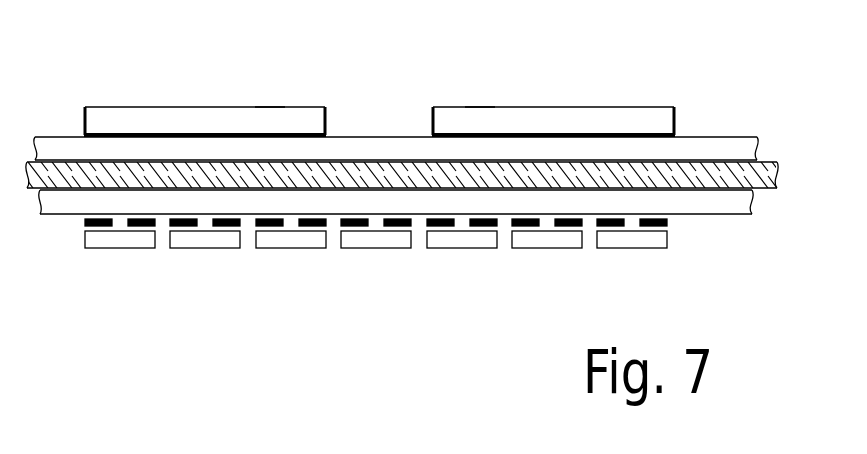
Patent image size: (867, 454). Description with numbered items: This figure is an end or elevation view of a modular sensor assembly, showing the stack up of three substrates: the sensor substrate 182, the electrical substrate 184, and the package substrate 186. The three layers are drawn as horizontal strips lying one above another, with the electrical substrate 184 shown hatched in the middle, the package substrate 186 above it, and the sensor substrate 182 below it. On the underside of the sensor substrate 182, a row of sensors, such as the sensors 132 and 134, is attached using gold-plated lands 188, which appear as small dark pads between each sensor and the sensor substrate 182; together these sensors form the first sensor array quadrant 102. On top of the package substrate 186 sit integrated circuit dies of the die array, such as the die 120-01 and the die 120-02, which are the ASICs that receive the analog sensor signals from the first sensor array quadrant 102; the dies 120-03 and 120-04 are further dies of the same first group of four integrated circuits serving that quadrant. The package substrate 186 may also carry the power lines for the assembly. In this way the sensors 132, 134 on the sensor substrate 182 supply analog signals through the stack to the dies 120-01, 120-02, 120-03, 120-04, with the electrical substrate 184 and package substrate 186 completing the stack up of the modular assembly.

The first sensor array quadrant 102 is at (435, 210).
The die 120-01 is at (523, 107).
The die 120-02 is at (158, 107).
The die 120-03 is at (480, 107).
The die 120-04 is at (268, 107).
The sensor 132 is at (143, 248).
The sensor 134 is at (240, 245).
The sensor substrate 182 is at (698, 214).
The electrical substrate 184 is at (777, 180).
The package substrate 186 is at (725, 137).
The gold-plated lands 188 is at (85, 221).